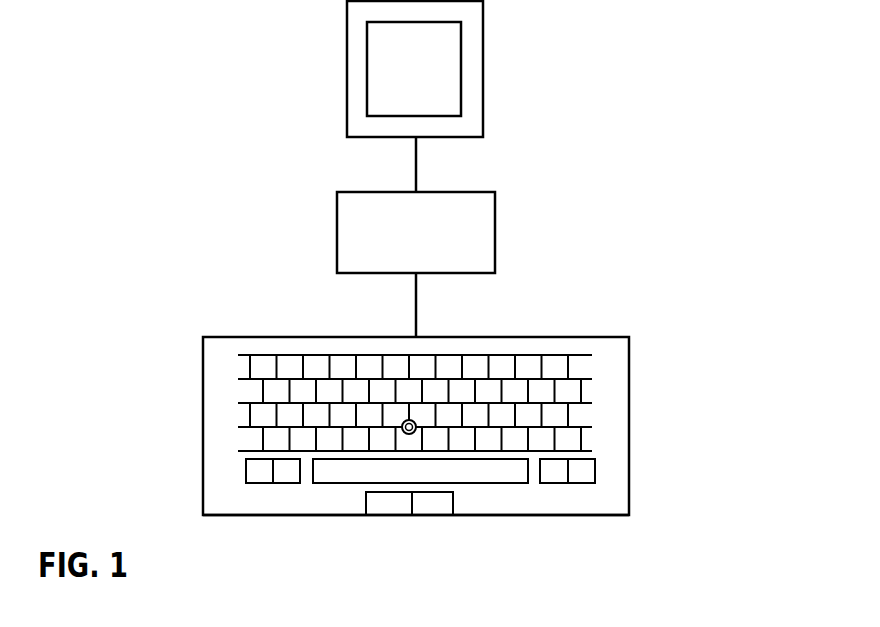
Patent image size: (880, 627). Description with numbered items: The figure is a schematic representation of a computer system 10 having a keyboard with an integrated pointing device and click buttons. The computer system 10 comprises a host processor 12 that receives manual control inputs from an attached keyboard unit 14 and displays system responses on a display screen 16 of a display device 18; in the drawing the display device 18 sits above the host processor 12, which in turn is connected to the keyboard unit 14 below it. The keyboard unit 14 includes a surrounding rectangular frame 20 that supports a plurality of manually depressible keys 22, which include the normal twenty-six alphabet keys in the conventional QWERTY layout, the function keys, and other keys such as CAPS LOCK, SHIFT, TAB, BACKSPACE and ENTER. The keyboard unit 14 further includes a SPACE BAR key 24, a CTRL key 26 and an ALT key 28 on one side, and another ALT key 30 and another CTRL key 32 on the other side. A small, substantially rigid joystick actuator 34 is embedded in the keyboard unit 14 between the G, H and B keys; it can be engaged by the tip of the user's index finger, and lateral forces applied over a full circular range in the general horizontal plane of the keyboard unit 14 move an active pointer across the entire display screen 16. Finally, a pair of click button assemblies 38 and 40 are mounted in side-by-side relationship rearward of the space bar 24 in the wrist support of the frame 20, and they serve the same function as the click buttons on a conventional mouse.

The computer system 10 is at (604, 52).
The host processor 12 is at (495, 218).
The keyboard unit 14 is at (629, 413).
The display screen 16 is at (367, 50).
The display device 18 is at (483, 40).
The rectangular frame 20 is at (620, 490).
The manually depressible keys 22 is at (267, 360).
The SPACE BAR key 24 is at (347, 475).
The CTRL key 26 is at (258, 478).
The ALT key 28 is at (287, 478).
The ALT key 30 is at (555, 478).
The CTRL key 32 is at (580, 478).
The joystick actuator 34 is at (403, 421).
The click button assembly 38 is at (392, 508).
The click button assembly 40 is at (440, 508).